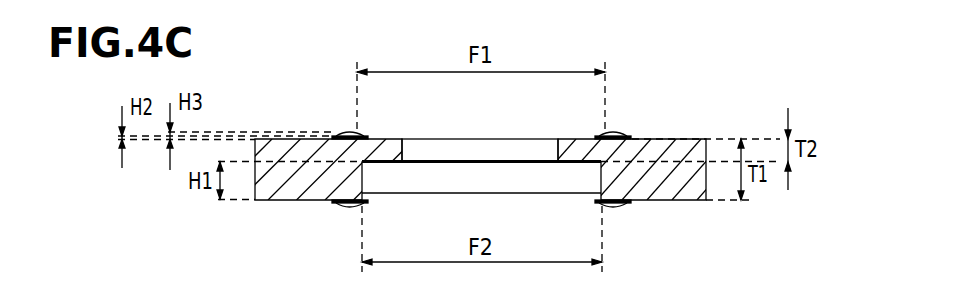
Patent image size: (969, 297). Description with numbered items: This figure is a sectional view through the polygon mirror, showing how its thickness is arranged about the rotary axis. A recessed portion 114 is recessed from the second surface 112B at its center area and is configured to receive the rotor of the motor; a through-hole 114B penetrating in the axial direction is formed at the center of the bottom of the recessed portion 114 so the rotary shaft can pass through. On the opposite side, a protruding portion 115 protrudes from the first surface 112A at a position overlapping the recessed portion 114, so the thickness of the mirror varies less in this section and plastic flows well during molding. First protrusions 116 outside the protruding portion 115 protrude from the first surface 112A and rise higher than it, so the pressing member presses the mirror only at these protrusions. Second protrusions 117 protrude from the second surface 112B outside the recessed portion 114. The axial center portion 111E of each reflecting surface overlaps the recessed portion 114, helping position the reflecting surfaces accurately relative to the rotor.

The axial center portion 111E is at (480, 168).
The first surface 112A is at (663, 138).
The second surface 112B is at (662, 201).
The recessed portion 114 is at (538, 184).
The through-hole 114B is at (557, 142).
The protruding portion 115 is at (395, 138).
The first protrusions 116 is at (347, 131).
The second protrusions 117 is at (343, 207).